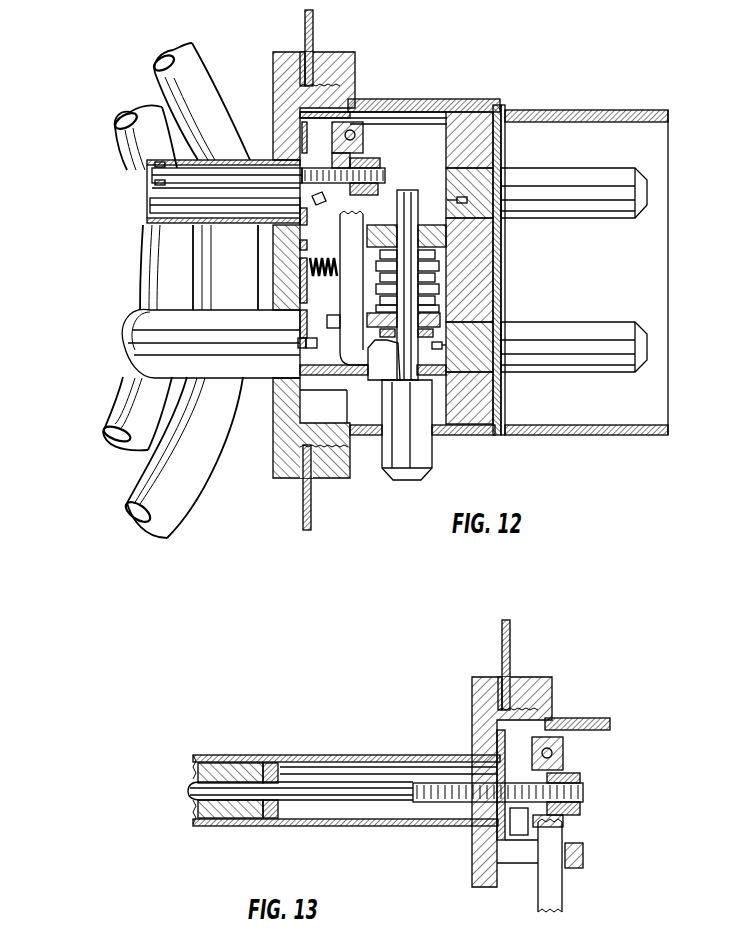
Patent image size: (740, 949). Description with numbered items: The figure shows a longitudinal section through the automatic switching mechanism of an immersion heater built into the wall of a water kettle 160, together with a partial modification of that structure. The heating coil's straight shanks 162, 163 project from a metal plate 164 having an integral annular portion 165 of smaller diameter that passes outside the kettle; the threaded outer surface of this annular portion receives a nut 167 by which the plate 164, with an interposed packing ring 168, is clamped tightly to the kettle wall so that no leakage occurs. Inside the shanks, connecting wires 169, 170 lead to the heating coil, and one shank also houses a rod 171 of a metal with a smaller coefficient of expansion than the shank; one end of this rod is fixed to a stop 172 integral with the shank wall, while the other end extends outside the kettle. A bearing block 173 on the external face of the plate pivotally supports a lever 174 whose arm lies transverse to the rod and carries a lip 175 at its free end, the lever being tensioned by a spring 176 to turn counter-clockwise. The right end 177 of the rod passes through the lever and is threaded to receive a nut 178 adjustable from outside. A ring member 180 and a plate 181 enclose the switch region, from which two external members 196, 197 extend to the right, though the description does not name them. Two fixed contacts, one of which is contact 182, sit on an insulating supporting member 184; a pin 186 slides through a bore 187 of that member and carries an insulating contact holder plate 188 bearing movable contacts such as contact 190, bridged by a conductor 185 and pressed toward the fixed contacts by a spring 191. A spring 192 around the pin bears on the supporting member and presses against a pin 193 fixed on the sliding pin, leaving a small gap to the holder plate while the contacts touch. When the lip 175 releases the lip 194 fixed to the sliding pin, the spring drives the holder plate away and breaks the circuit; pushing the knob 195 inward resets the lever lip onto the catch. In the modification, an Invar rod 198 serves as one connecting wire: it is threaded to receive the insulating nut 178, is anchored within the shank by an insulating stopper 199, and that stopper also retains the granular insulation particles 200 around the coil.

In FIG. 12, the water kettle 160 is at (313, 21).
In FIG. 12, the straight shank 162 is at (162, 160).
In FIG. 13, the straight shank 162 is at (365, 826).
In FIG. 12, the straight shank 163 is at (138, 353).
In FIG. 12, the metal plate 164 is at (275, 460).
In FIG. 12, the annular portion 165 is at (355, 92).
In FIG. 12, the nut 167 is at (316, 472).
In FIG. 12, the packing ring 168 is at (302, 58).
In FIG. 12, the connecting wire 169 is at (297, 342).
In FIG. 12, the connecting wire 170 is at (313, 208).
In FIG. 12, the rod 171 is at (262, 178).
In FIG. 12, the stop 172 is at (155, 182).
In FIG. 12, the bearing block 173 is at (298, 128).
In FIG. 12, the lever 174 is at (350, 327).
In FIG. 13, the lever 174 is at (563, 893).
In FIG. 12, the lip 175 is at (358, 377).
In FIG. 12, the spring 176 is at (320, 289).
In FIG. 12, the right end of rod 177 is at (385, 174).
In FIG. 12, the nut 178 is at (372, 166).
In FIG. 13, the nut 178 is at (586, 777).
In FIG. 12, the ring member 180 is at (472, 436).
In FIG. 12, the plate 181 is at (503, 131).
In FIG. 12, the contact 182 is at (440, 266).
In FIG. 12, the supporting member 184 is at (277, 245).
In FIG. 12, the conductor 185 is at (378, 316).
In FIG. 12, the pin 186 is at (416, 196).
In FIG. 12, the bore 187 is at (378, 228).
In FIG. 12, the contact holder plate 188 is at (440, 310).
In FIG. 12, the contact 190 is at (440, 284).
In FIG. 12, the spring 191 is at (424, 338).
In FIG. 12, the spring 192 is at (380, 272).
In FIG. 12, the pin 193 is at (440, 298).
In FIG. 12, the lip 194 is at (390, 372).
In FIG. 12, the knob 195 is at (415, 470).
In FIG. 12, the upper tube 196 is at (632, 183).
In FIG. 12, the lower tube 197 is at (632, 335).
In FIG. 13, the Invar rod 198 is at (328, 790).
In FIG. 13, the stopper 199 is at (270, 820).
In FIG. 13, the granular insulation particles 200 is at (226, 762).